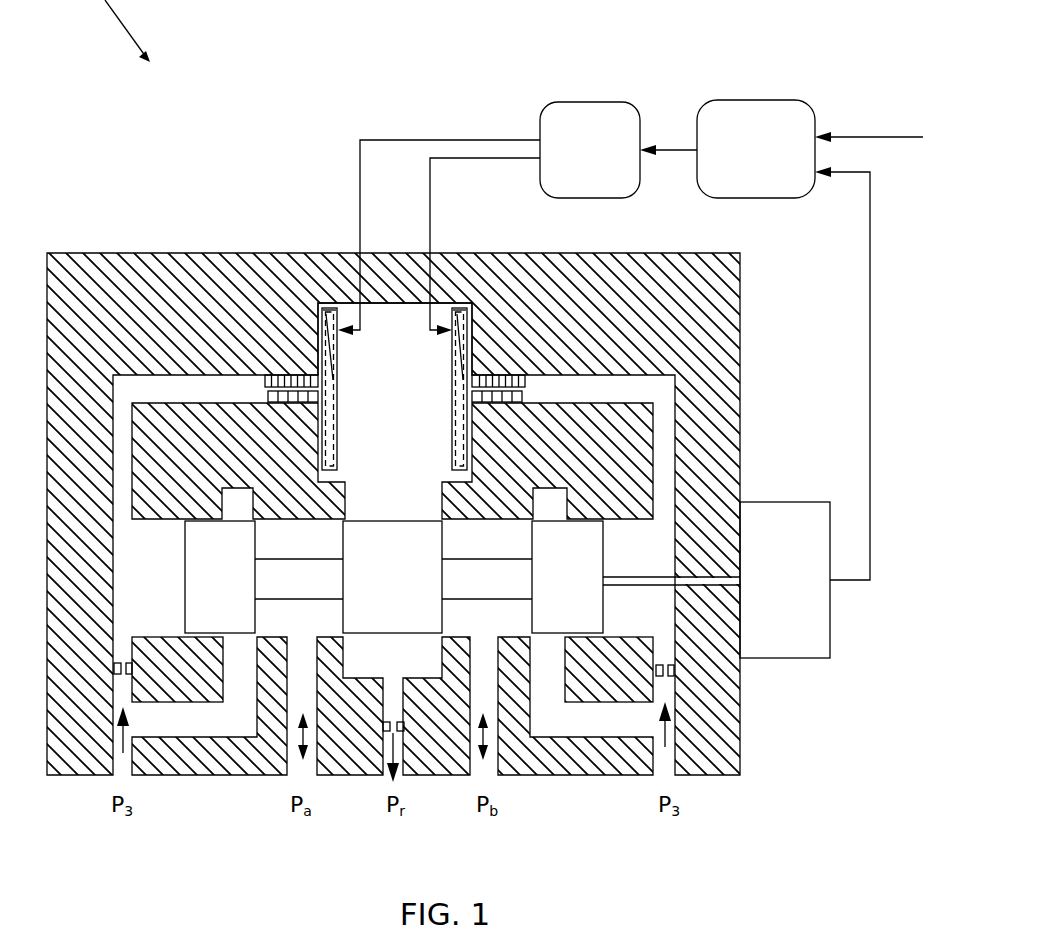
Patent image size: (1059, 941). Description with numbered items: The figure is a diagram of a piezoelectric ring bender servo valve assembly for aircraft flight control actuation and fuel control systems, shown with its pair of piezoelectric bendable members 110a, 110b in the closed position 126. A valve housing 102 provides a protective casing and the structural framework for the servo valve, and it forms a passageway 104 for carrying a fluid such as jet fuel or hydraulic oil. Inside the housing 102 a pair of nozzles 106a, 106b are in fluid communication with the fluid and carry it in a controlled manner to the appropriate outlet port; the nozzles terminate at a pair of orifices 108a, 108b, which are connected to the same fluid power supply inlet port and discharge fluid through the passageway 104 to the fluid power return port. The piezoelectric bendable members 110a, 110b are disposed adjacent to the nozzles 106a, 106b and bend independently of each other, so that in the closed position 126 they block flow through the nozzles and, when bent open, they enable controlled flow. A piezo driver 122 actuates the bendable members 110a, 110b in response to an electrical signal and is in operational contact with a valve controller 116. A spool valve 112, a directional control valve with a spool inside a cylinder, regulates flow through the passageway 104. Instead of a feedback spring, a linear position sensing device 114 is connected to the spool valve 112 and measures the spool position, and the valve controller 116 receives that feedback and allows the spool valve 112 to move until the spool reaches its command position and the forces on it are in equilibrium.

The valve housing 102 is at (113, 252).
The passageway 104 is at (373, 367).
The nozzle 106a is at (268, 378).
The nozzle 106b is at (526, 377).
The orifice 108a is at (130, 674).
The orifice 108b is at (672, 676).
The piezoelectric bendable member 110a is at (328, 308).
The piezoelectric bendable member 110b is at (465, 306).
The spool valve 112 is at (185, 570).
The linear position sensing device 114 is at (788, 526).
The valve controller 116 is at (770, 128).
The piezo driver 122 is at (593, 128).
The closed position 126 is at (432, 414).